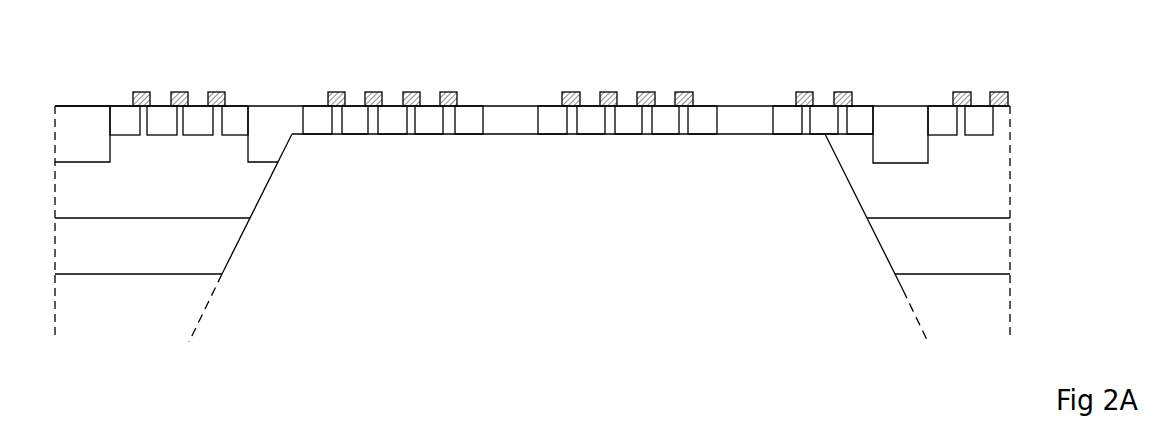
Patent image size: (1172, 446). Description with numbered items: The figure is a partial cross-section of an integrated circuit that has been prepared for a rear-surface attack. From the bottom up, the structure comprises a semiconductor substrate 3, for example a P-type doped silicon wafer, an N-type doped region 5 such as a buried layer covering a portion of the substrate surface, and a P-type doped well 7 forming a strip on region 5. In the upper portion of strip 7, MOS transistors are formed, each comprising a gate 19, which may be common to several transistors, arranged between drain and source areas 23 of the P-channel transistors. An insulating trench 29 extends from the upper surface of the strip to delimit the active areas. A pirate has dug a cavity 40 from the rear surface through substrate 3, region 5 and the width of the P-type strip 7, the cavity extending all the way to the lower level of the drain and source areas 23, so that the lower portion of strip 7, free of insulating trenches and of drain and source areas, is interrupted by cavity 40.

The semiconductor substrate 3 is at (77, 303).
The N-type doped region 5 is at (77, 248).
The P-type doped well 7 is at (60, 190).
The gate 19 is at (177, 98).
The drain and source areas 23 is at (237, 113).
The insulating trench 29 is at (82, 115).
The cavity 40 is at (493, 297).